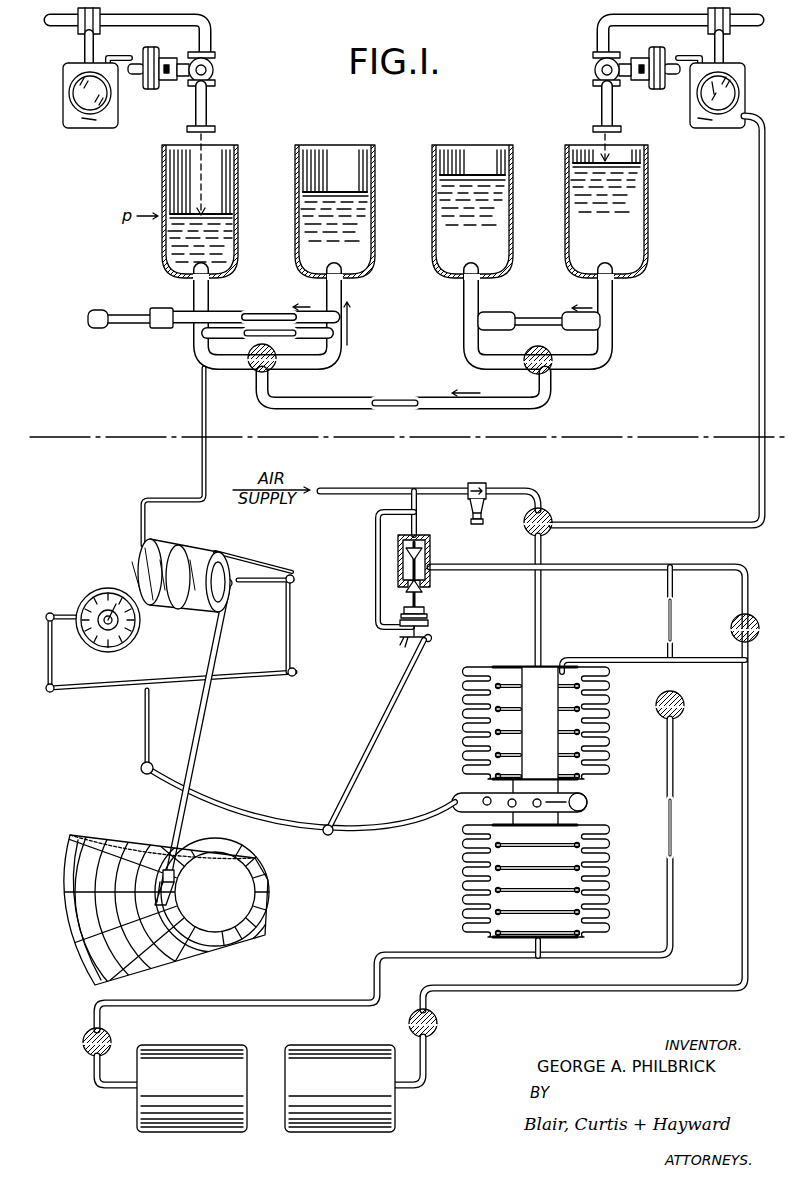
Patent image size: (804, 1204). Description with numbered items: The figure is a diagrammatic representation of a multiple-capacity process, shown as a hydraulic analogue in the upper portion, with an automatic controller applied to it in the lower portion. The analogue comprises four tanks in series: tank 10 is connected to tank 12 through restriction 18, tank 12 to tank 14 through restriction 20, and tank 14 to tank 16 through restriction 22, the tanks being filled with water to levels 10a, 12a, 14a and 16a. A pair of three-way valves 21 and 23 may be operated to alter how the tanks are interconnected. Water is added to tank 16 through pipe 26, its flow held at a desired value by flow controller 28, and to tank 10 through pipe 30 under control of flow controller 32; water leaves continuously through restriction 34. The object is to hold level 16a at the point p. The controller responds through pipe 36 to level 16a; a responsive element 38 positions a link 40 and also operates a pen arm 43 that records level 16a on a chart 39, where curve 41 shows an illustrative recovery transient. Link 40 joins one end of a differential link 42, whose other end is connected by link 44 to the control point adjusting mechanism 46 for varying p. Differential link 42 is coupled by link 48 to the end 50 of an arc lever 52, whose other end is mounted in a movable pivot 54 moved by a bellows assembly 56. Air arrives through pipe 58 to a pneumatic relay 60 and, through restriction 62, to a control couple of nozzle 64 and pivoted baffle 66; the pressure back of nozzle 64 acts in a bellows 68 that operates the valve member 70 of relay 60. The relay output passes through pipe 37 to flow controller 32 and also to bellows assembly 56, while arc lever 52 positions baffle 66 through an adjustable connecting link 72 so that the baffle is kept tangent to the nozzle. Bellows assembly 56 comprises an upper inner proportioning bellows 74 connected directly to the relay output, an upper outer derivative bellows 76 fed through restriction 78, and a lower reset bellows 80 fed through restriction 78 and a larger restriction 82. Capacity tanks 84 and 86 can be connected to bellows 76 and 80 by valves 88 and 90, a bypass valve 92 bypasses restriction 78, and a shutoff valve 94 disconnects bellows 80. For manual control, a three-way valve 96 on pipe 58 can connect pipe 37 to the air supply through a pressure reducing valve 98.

The tank 10 is at (640, 218).
The water level 10a is at (636, 165).
The tank 12 is at (500, 228).
The water level 12a is at (500, 176).
The tank 14 is at (360, 238).
The water level 14a is at (358, 190).
The tank 16 is at (222, 240).
The water level 16a is at (222, 212).
The restriction 18 is at (538, 313).
The restriction 20 is at (403, 398).
The three-way valve 21 is at (252, 368).
The restriction 22 is at (268, 312).
The three-way valve 23 is at (547, 370).
The pipe 26 is at (210, 103).
The flow controller 28 is at (100, 98).
The pipe 30 is at (598, 103).
The flow controller 32 is at (728, 86).
The restriction 34 is at (130, 318).
The pipe 36 is at (202, 408).
The pipe 37 is at (758, 325).
The responsive element 38 is at (195, 548).
The chart 39 is at (118, 855).
The link 40 is at (292, 624).
The curve 41 is at (172, 947).
The differential link 42 is at (258, 672).
The pen arm 43 is at (198, 745).
The link 44 is at (52, 655).
The control point adjusting mechanism 46 is at (92, 605).
The link 48 is at (144, 722).
The end of arc lever 50 is at (128, 773).
The arc lever 52 is at (262, 812).
The movable pivot 54 is at (510, 806).
The bellows assembly 56 is at (613, 822).
The air supply pipe 58 is at (366, 490).
The pneumatic relay 60 is at (438, 551).
The restriction 62 is at (377, 562).
The nozzle 64 is at (428, 627).
The pivoted baffle 66 is at (427, 643).
The bellows 68 is at (426, 611).
The valve member 70 is at (420, 572).
The connecting link 72 is at (366, 745).
The proportioning bellows 74 is at (506, 700).
The derivative bellows 76 is at (607, 727).
The restriction 78 is at (667, 615).
The reset bellows 80 is at (607, 885).
The restriction 82 is at (672, 835).
The capacity tank 84 is at (343, 1128).
The capacity tank 86 is at (193, 1128).
The valve 88 is at (436, 1018).
The valve 90 is at (86, 1036).
The bypass valve 92 is at (752, 617).
The shutoff valve 94 is at (680, 715).
The three-way valve 96 is at (550, 514).
The pressure reducing valve 98 is at (480, 485).